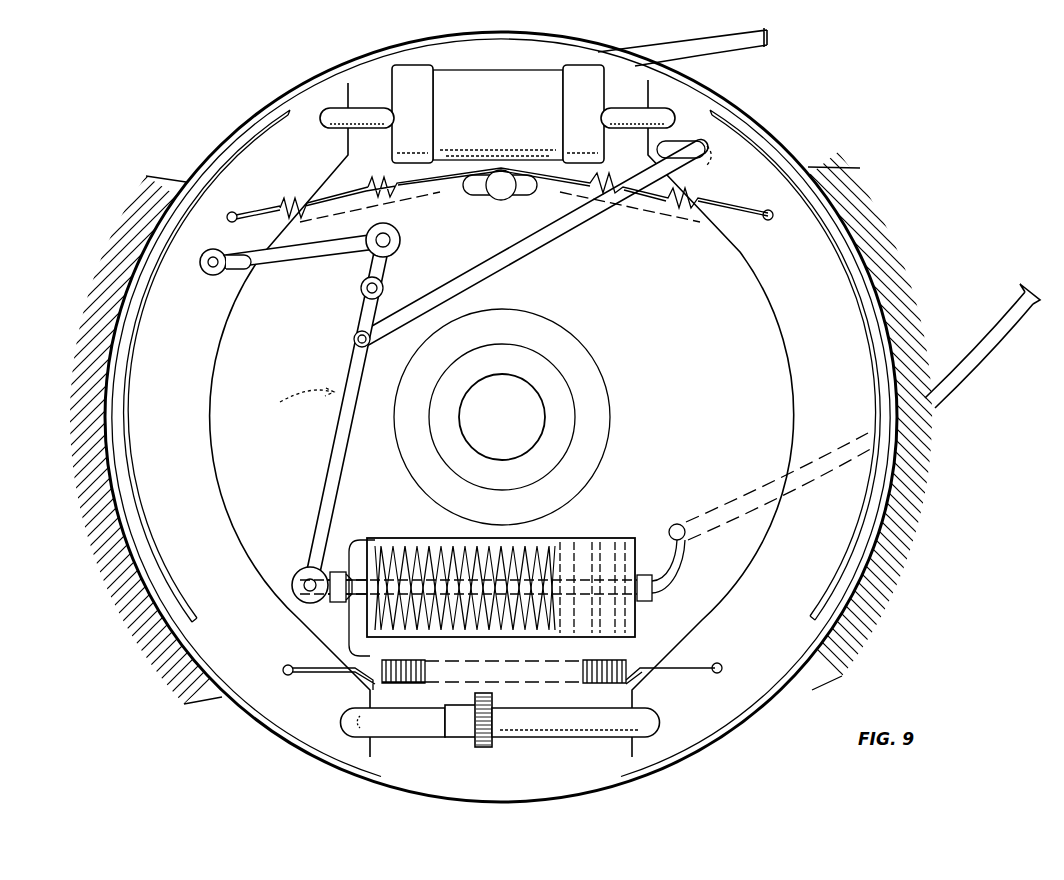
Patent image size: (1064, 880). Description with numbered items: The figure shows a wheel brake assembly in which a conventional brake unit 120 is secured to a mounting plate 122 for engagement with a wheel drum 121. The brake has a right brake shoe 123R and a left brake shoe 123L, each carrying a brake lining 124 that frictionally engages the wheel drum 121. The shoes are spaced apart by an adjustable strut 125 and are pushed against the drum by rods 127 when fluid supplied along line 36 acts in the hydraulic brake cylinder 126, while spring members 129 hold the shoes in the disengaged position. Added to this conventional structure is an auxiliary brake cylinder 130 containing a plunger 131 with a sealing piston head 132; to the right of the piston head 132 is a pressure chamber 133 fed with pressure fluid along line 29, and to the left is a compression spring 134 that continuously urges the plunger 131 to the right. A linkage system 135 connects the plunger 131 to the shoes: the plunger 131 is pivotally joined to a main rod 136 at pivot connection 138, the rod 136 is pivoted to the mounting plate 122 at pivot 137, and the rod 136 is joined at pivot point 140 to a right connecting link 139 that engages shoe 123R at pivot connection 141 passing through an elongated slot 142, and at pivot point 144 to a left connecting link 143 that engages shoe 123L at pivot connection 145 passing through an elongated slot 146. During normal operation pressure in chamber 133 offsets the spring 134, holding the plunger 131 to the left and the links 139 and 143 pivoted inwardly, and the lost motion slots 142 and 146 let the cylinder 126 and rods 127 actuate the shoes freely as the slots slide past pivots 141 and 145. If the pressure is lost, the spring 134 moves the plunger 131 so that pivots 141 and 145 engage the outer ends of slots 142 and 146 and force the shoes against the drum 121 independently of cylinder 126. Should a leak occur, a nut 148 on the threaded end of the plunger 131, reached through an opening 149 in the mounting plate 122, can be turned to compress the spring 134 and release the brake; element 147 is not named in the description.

The line 29 is at (980, 360).
The line 36 is at (730, 64).
The brake unit 120 is at (261, 96).
The wheel drum 121 is at (75, 452).
The mounting plate 122 is at (569, 417).
The left brake shoe 123L is at (265, 420).
The right brake shoe 123R is at (734, 418).
The brake lining 124 is at (223, 163).
The adjustable strut 125 is at (596, 732).
The hydraulic brake cylinder 126 is at (498, 114).
The rods 127 is at (360, 110).
The spring members 129 is at (666, 202).
The auxiliary brake cylinder 130 is at (592, 532).
The plunger 131 is at (450, 538).
The sealing piston head 132 is at (605, 632).
The pressure chamber 133 is at (640, 545).
The compression spring 134 is at (550, 545).
The linkage system 135 is at (307, 405).
The rod 136 is at (335, 470).
The pivot connection 137 is at (383, 288).
The pivot connection 138 is at (300, 568).
The right connecting link 139 is at (545, 242).
The pivot point 140 is at (354, 344).
The pivot connection 141 is at (706, 166).
The elongated slot 142 is at (690, 137).
The left connecting link 143 is at (322, 252).
The pivot point 144 is at (398, 240).
The pivot connection 145 is at (212, 276).
The elongated slot 146 is at (238, 272).
The rod end 147 is at (338, 604).
The nut 148 is at (342, 604).
The opening 149 is at (365, 530).